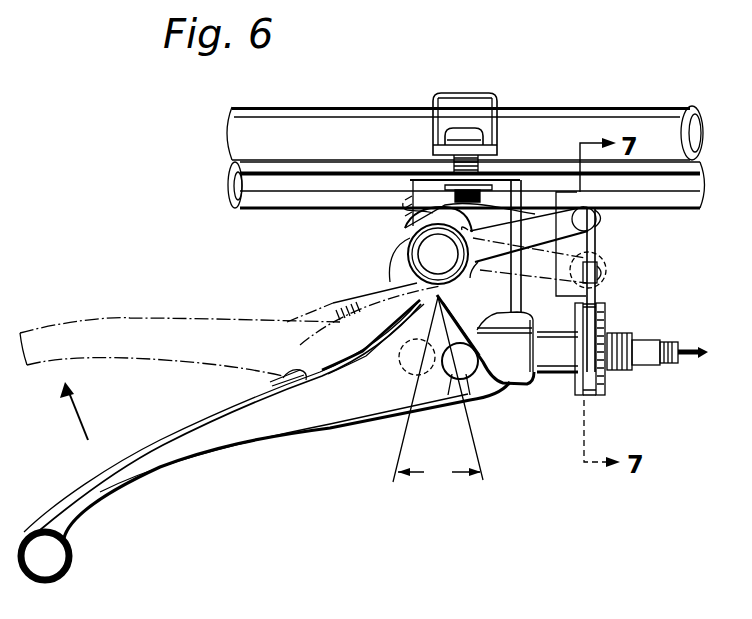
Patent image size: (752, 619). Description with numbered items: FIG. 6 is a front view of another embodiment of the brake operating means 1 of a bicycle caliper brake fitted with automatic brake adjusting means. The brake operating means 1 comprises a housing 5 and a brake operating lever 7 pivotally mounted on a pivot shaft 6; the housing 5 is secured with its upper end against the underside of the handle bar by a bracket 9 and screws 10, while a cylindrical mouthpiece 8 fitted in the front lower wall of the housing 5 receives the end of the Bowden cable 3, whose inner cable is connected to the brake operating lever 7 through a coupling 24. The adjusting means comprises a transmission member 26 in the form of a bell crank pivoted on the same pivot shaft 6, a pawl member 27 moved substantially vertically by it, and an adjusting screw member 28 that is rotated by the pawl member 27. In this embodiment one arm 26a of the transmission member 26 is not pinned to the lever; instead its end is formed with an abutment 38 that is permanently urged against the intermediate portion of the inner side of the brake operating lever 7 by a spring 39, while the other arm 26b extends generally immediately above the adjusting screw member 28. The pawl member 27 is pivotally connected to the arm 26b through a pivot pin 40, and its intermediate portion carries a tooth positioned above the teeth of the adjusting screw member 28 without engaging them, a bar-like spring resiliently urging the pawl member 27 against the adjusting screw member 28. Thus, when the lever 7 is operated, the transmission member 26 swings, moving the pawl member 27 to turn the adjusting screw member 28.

The brake operating means 1 is at (325, 448).
The Bowden cable 3 is at (670, 338).
The housing 5 is at (437, 213).
The pivot shaft 6 is at (427, 252).
The brake operating lever 7 is at (166, 466).
The cylindrical mouthpiece 8 is at (560, 370).
The bracket 9 is at (452, 95).
The screws 10 is at (480, 128).
The coupling 24 is at (470, 374).
The transmission member 26 is at (330, 305).
The one arm of the transmission member 26a is at (290, 365).
The other arm of the transmission member 26b is at (538, 212).
The pawl member 27 is at (600, 246).
The adjusting screw member 28 is at (603, 398).
The abutment 38 is at (268, 374).
The spring 39 is at (380, 284).
The pivot pin 40 is at (604, 216).